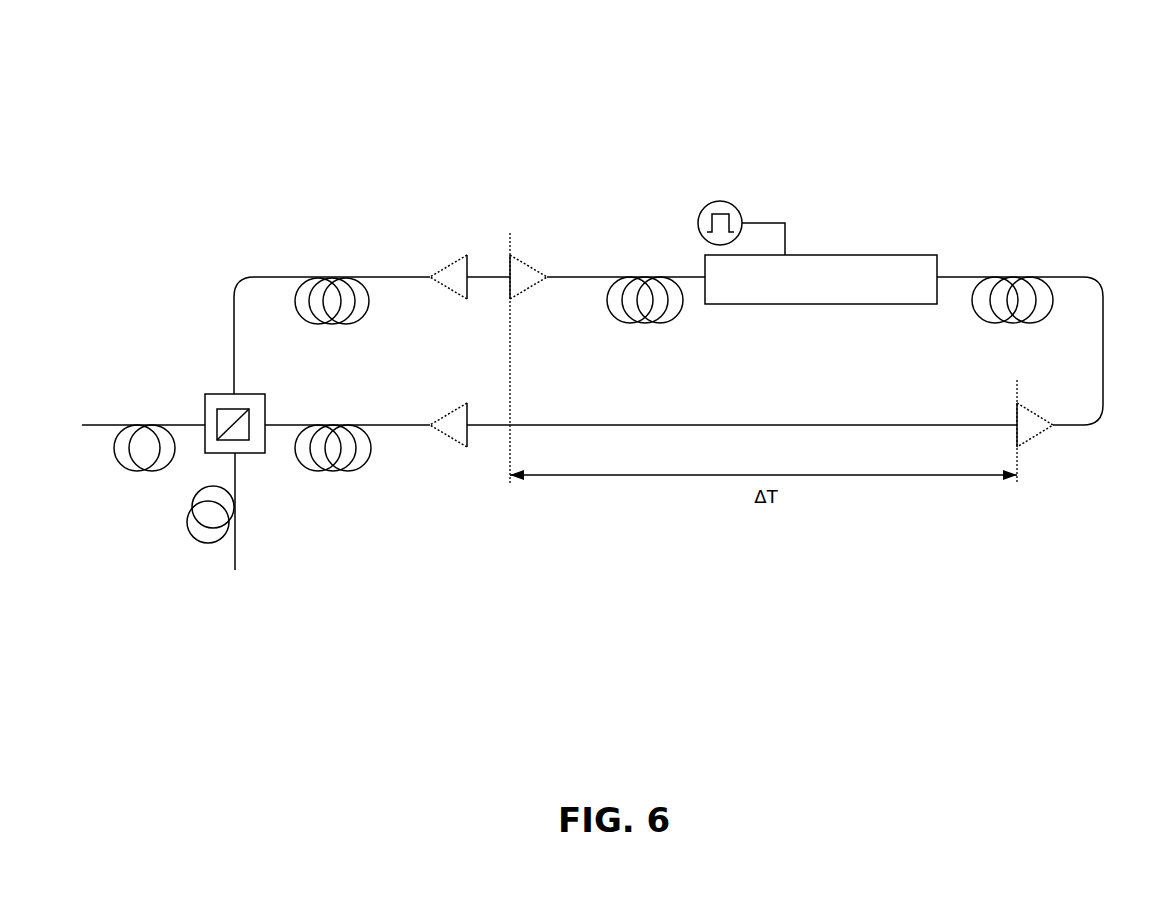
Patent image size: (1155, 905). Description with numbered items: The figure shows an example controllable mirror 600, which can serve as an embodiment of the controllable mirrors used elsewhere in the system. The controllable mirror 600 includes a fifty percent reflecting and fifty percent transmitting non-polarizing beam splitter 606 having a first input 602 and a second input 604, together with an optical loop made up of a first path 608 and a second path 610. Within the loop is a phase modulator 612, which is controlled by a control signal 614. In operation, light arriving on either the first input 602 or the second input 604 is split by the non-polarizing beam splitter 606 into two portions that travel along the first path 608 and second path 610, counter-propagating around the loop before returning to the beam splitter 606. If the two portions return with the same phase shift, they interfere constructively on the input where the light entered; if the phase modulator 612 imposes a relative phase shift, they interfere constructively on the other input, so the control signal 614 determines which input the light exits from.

The controllable mirror 600 is at (1143, 81).
The first input 602 is at (100, 423).
The second input 604 is at (235, 552).
The non-polarizing beam splitter 606 is at (248, 453).
The first path 608 is at (388, 260).
The second path 610 is at (470, 460).
The phase modulator 612 is at (890, 255).
The control signal 614 is at (698, 223).